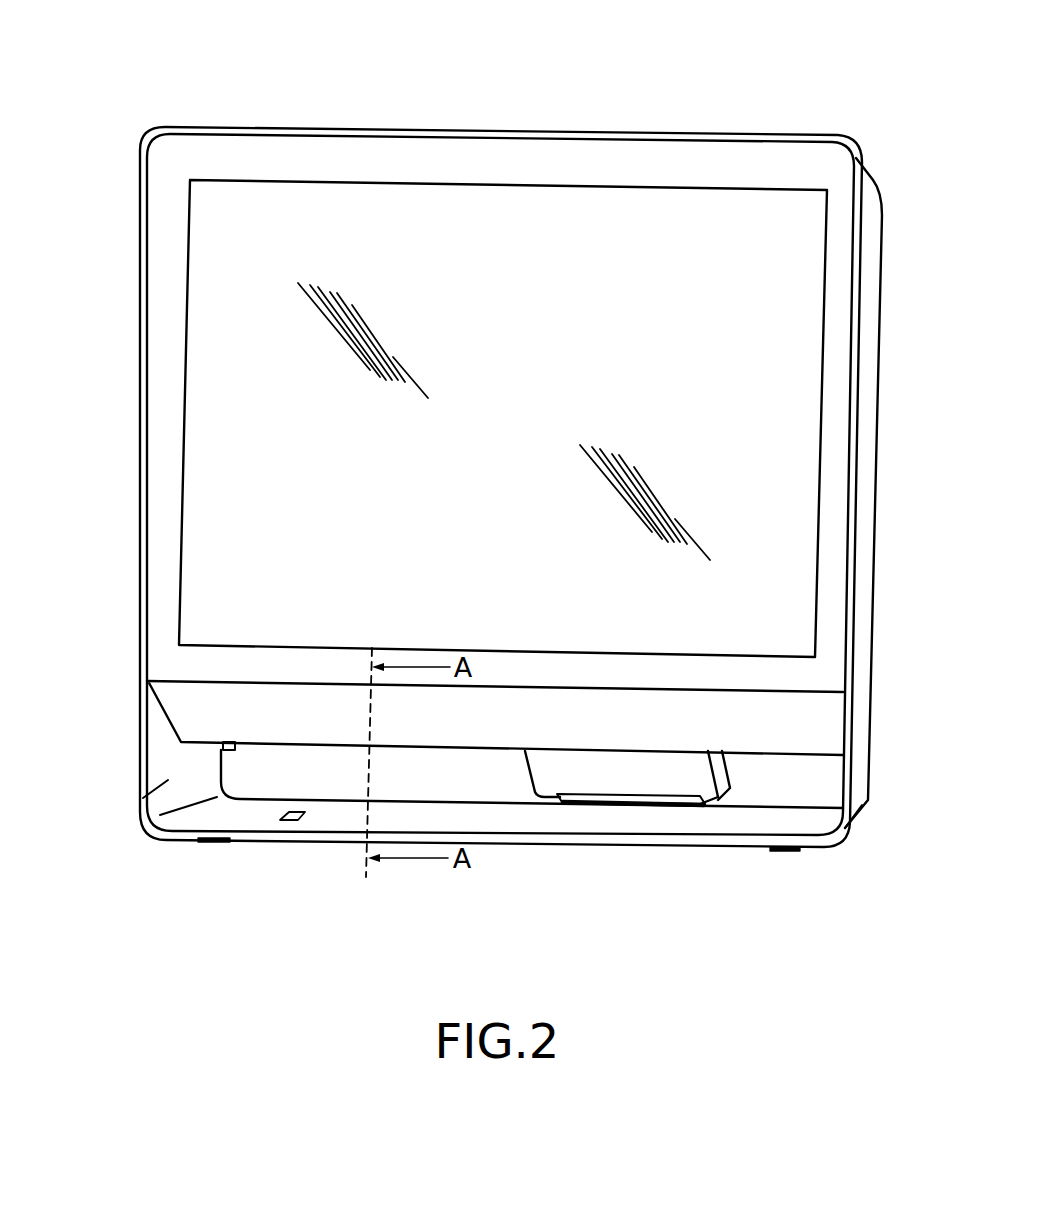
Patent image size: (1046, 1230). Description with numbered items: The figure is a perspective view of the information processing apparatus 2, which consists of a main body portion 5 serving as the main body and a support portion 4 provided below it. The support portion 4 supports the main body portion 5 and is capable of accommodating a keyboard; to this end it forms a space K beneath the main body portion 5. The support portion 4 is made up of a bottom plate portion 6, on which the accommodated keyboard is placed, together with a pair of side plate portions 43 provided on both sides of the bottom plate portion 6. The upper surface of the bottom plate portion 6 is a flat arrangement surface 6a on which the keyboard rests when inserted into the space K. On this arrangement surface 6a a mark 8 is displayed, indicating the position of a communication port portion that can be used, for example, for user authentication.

The information processing apparatus 2 is at (507, 110).
The main body portion 5 is at (865, 428).
The support portion 4 is at (874, 757).
The side plate portions 43 is at (147, 798).
The space K is at (238, 763).
The mark 8 is at (294, 822).
The bottom plate portion 6 is at (633, 824).
The arrangement surface 6a is at (631, 799).